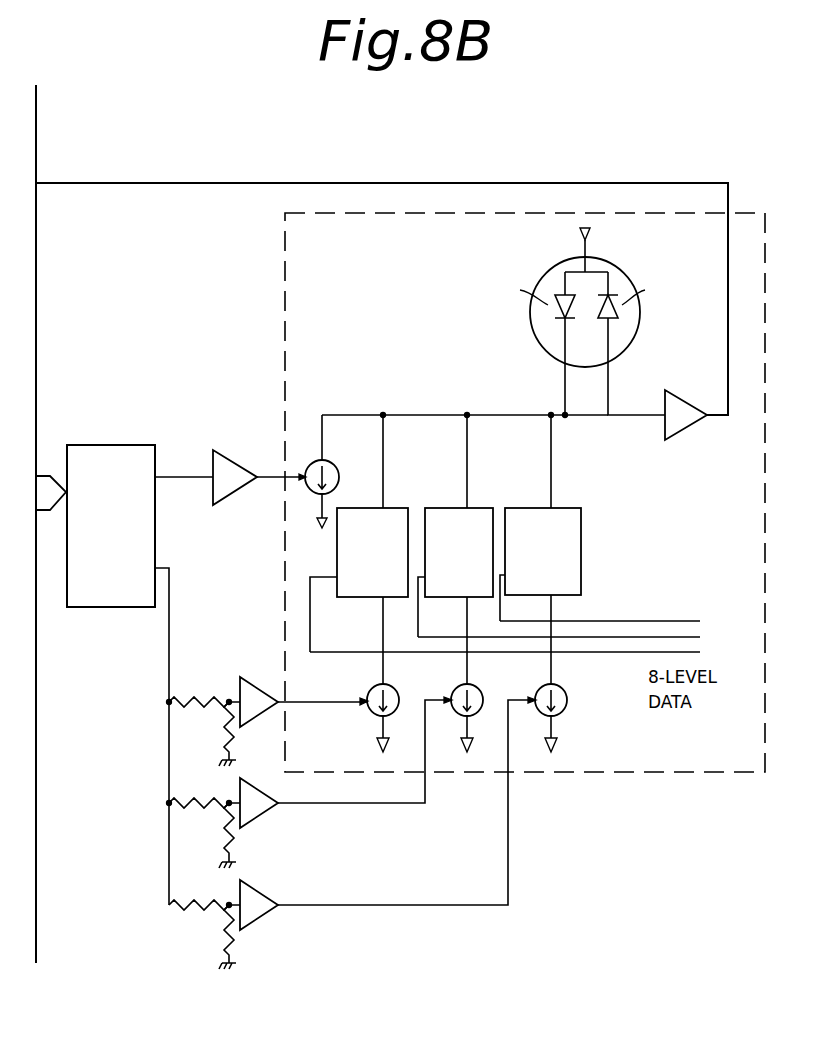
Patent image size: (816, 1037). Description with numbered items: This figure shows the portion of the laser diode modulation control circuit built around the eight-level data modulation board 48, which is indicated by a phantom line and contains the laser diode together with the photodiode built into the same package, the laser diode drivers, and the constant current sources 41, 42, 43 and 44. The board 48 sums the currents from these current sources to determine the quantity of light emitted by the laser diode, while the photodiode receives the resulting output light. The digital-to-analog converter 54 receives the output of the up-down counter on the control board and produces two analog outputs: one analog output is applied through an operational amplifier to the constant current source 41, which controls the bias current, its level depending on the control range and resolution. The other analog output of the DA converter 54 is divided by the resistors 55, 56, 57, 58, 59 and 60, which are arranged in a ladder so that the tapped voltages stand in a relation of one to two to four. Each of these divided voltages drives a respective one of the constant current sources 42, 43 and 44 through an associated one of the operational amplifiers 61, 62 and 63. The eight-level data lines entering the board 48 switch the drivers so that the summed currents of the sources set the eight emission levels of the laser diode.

The 8-level data modulation board 48 is at (505, 247).
The digital-to-analog converter 54 is at (145, 445).
The constant current source 41 is at (339, 477).
The constant current source 42 is at (400, 700).
The constant current source 43 is at (484, 700).
The constant current source 44 is at (568, 700).
The resistor 55 is at (200, 698).
The resistor 56 is at (226, 730).
The resistor 57 is at (193, 800).
The resistor 58 is at (226, 830).
The resistor 59 is at (198, 902).
The resistor 60 is at (224, 935).
The operational amplifier 61 is at (251, 680).
The operational amplifier 62 is at (255, 786).
The operational amplifier 63 is at (262, 893).